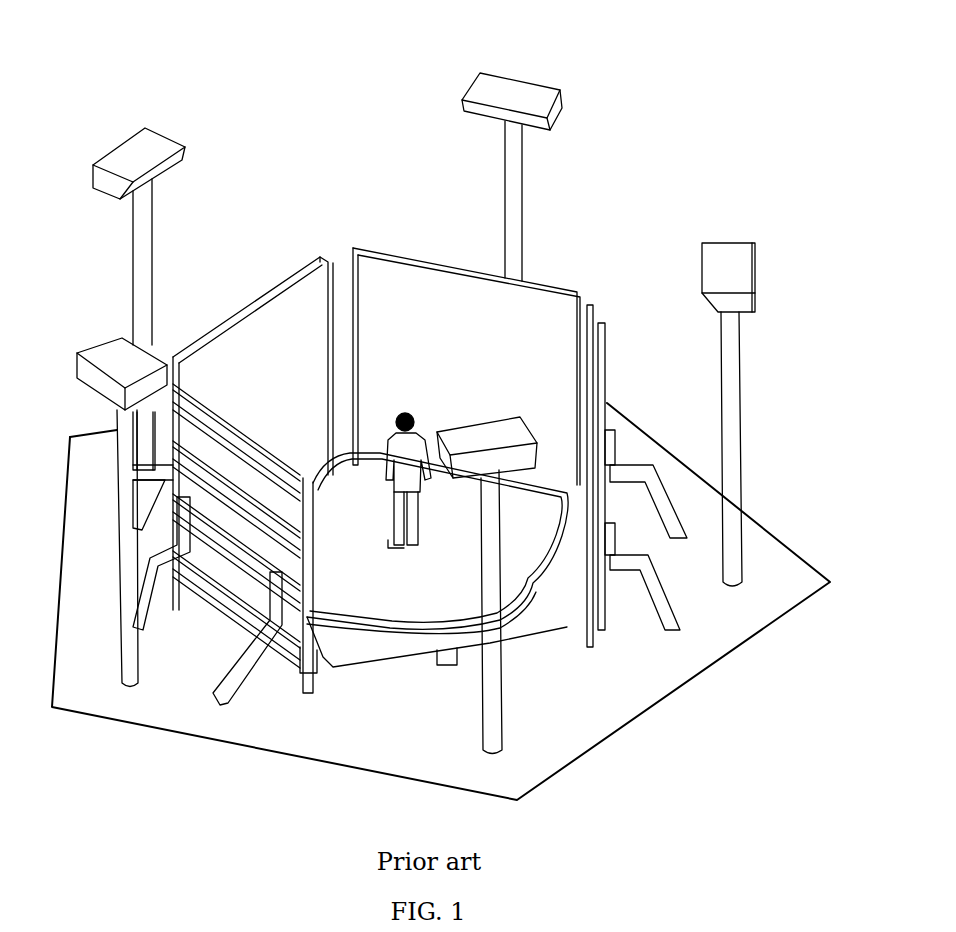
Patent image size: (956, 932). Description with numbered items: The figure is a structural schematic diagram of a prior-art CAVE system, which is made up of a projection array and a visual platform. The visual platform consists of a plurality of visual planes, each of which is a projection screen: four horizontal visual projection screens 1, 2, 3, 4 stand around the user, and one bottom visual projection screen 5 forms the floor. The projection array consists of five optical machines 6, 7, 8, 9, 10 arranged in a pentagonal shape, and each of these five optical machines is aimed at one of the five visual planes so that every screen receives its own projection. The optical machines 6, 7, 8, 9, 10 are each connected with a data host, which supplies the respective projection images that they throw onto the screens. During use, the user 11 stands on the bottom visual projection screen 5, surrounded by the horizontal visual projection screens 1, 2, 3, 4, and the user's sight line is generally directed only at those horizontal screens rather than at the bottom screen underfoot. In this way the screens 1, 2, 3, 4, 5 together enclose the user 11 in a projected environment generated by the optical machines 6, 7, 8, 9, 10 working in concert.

The horizontal visual projection screen 1 is at (420, 293).
The horizontal visual projection screen 2 is at (293, 343).
The horizontal visual projection screen 3 is at (244, 428).
The horizontal visual projection screen 4 is at (598, 376).
The bottom visual projection screen 5 is at (392, 595).
The optical machine 6 is at (136, 160).
The optical machine 7 is at (508, 95).
The optical machine 8 is at (736, 265).
The optical machine 9 is at (490, 435).
The optical machine 10 is at (119, 372).
The user 11 is at (407, 408).